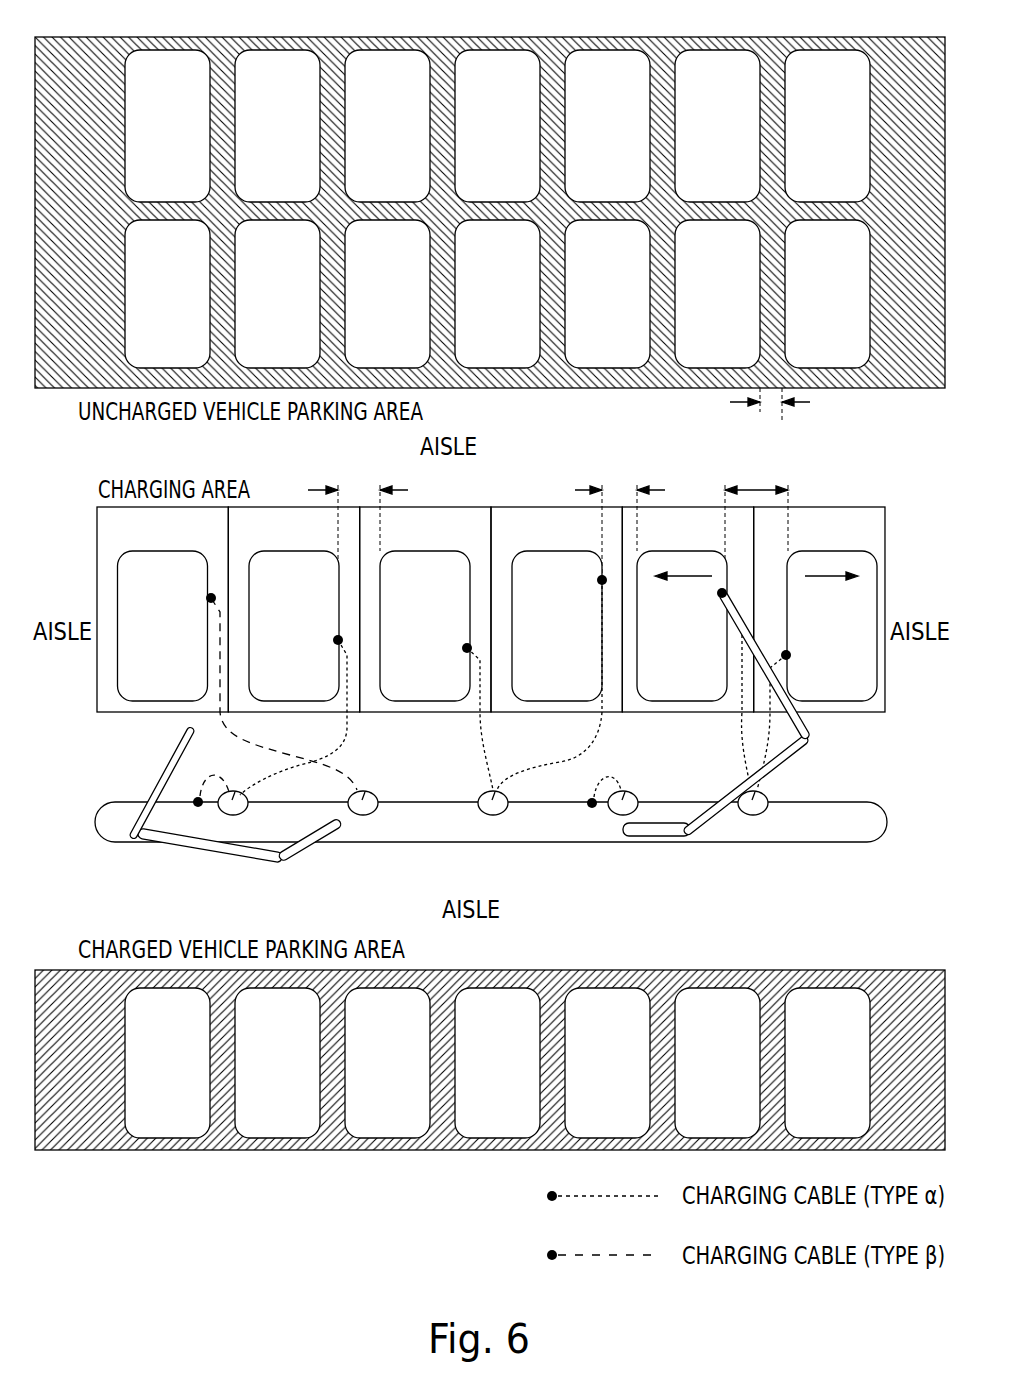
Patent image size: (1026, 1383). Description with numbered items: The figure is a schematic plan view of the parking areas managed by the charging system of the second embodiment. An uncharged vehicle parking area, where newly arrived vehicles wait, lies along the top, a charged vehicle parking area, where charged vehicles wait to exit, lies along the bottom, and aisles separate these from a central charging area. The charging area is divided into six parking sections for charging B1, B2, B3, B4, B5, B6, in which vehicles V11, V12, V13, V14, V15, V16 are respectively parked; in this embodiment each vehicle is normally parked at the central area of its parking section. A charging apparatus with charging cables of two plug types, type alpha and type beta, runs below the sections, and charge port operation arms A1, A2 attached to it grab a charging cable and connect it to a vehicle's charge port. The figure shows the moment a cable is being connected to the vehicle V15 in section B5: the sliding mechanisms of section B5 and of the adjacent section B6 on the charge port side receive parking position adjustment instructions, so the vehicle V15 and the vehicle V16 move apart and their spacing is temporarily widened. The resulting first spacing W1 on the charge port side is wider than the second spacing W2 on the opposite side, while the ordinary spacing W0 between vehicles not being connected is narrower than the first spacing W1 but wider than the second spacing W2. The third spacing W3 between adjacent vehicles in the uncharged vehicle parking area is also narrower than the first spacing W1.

The parking section for charging B1 is at (162, 609).
The parking section for charging B2 is at (293, 609).
The parking section for charging B3 is at (425, 609).
The parking section for charging B4 is at (556, 609).
The parking section for charging B5 is at (687, 609).
The parking section for charging B6 is at (819, 609).
The vehicle V11 is at (163, 626).
The vehicle V12 is at (294, 626).
The vehicle V13 is at (425, 626).
The vehicle V14 is at (557, 626).
The vehicle V15 is at (682, 626).
The vehicle V16 is at (832, 626).
The charge port operation arm A1 is at (165, 763).
The charge port operation arm A2 is at (783, 752).
The spacing W0 is at (358, 550).
The first spacing W1 is at (756, 526).
The second spacing W2 is at (620, 520).
The third spacing W3 is at (778, 412).